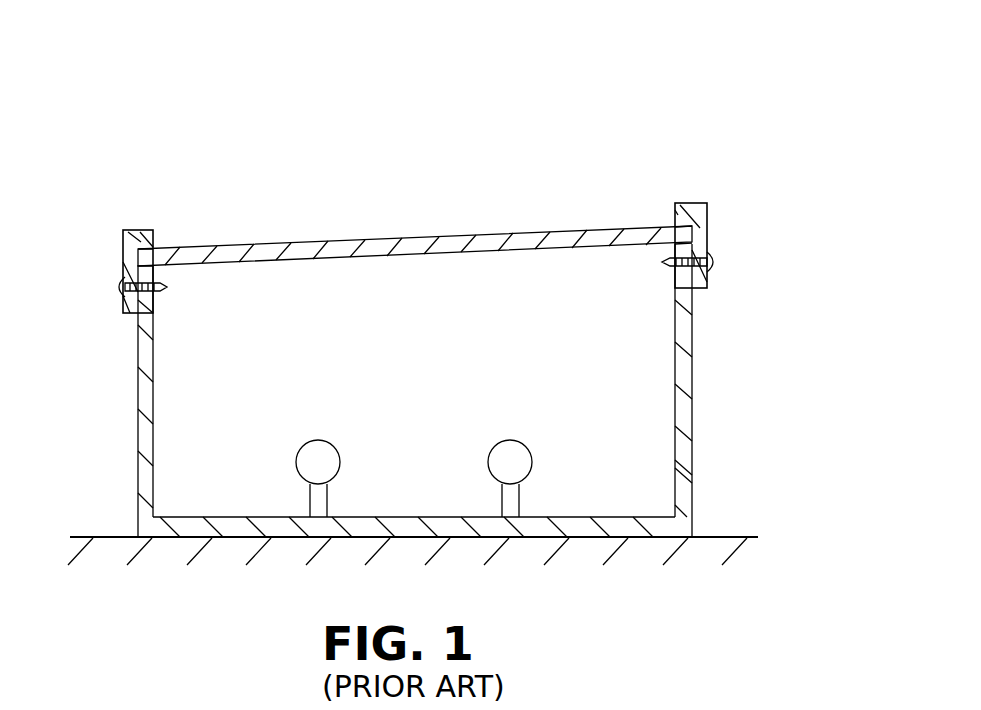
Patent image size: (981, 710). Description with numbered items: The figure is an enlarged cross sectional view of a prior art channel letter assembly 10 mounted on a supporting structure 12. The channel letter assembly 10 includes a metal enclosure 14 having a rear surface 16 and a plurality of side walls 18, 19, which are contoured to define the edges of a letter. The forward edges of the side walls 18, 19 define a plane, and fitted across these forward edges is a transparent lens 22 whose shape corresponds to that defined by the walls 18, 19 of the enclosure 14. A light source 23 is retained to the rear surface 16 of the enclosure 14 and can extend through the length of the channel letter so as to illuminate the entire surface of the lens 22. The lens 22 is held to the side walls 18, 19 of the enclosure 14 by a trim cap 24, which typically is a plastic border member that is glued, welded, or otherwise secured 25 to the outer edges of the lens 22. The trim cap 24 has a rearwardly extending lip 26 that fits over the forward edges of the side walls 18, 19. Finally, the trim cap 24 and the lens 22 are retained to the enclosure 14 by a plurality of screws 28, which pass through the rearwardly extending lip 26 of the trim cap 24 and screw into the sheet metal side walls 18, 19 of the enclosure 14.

The channel letter assembly 10 is at (612, 110).
The supporting structure 12 is at (728, 537).
The metal enclosure 14 is at (693, 373).
The rear surface 16 is at (212, 517).
The side wall 18 is at (142, 410).
The side wall 19 is at (684, 440).
The transparent lens 22 is at (385, 245).
The light source 23 is at (328, 446).
The trim cap 24 is at (138, 231).
The securement of trim cap to lens 25 is at (150, 262).
The rearwardly extending lip 26 is at (130, 312).
The screws 28 is at (116, 286).